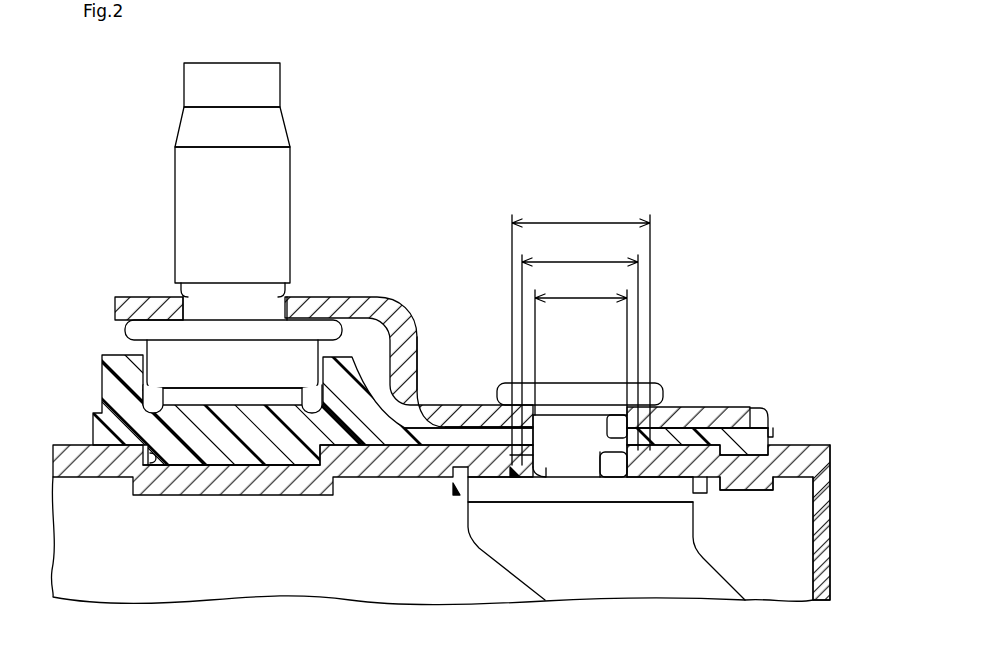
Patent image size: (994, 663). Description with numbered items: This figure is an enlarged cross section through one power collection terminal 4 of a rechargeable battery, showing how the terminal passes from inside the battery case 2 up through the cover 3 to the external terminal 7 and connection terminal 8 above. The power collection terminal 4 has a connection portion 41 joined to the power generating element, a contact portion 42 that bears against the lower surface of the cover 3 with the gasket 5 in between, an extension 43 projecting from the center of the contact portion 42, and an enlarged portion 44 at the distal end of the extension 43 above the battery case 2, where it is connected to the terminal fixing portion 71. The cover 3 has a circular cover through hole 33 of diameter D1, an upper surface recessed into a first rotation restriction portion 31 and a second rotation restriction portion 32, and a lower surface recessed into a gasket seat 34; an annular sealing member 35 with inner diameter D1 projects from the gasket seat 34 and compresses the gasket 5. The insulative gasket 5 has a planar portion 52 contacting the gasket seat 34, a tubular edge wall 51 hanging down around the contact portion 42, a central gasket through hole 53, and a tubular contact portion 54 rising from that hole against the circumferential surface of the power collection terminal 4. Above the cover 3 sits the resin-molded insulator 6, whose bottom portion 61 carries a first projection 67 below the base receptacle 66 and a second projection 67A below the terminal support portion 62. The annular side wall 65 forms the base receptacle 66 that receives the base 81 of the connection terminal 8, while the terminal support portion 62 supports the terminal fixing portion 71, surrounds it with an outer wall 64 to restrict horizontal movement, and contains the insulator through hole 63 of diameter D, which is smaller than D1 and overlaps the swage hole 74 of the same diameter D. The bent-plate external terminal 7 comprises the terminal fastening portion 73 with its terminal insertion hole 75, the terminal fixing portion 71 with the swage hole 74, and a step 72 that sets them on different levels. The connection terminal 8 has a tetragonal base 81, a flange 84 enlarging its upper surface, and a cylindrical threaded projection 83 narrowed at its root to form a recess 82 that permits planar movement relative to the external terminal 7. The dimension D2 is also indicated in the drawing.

The battery case 2 is at (828, 500).
The cover 3 is at (62, 447).
The power collection terminal 4 is at (580, 430).
The gasket 5 is at (702, 459).
The insulator 6 is at (94, 366).
The external terminal 7 is at (389, 336).
The connection terminal 8 is at (233, 295).
The first rotation restriction portion 31 is at (158, 465).
The second rotation restriction portion 32 is at (773, 434).
The cover through hole 33 is at (535, 478).
The gasket seat 34 is at (484, 478).
The sealing member 35 is at (631, 480).
The connection portion 41 is at (512, 565).
The contact portion 42 is at (568, 499).
The extension 43 is at (542, 414).
The enlarged portion 44 is at (585, 392).
The tubular edge wall 51 is at (700, 490).
The planar portion 52 is at (705, 407).
The gasket through hole 53 is at (615, 487).
The tubular contact portion 54 is at (605, 475).
The bottom portion 61 is at (370, 446).
The terminal support portion 62 is at (735, 407).
The insulator through hole 63 is at (612, 414).
The outer wall 64 is at (768, 418).
The annular side wall 65 is at (374, 312).
The base receptacle 66 is at (143, 396).
The first projection 67 is at (186, 470).
The second projection 67A is at (760, 465).
The terminal fixing portion 71 is at (457, 405).
The step 72 is at (424, 350).
The terminal fastening portion 73 is at (145, 297).
The swage hole 74 is at (508, 398).
The terminal insertion hole 75 is at (200, 326).
The base 81 is at (248, 392).
The recess 82 is at (289, 296).
The projection 83 is at (175, 178).
The flange 84 is at (270, 338).
The diameter D is at (581, 343).
The diameter D1 is at (580, 349).
The diameter D2 is at (581, 330).